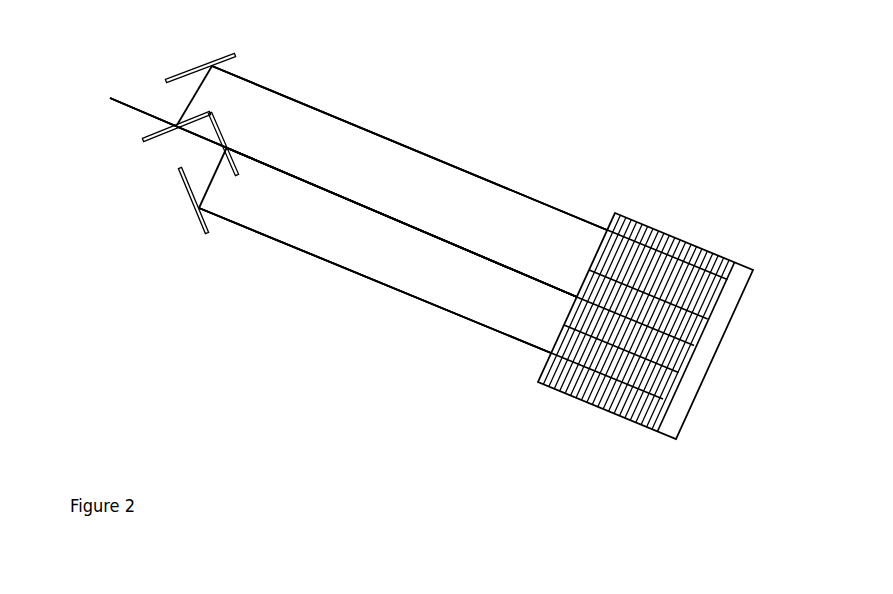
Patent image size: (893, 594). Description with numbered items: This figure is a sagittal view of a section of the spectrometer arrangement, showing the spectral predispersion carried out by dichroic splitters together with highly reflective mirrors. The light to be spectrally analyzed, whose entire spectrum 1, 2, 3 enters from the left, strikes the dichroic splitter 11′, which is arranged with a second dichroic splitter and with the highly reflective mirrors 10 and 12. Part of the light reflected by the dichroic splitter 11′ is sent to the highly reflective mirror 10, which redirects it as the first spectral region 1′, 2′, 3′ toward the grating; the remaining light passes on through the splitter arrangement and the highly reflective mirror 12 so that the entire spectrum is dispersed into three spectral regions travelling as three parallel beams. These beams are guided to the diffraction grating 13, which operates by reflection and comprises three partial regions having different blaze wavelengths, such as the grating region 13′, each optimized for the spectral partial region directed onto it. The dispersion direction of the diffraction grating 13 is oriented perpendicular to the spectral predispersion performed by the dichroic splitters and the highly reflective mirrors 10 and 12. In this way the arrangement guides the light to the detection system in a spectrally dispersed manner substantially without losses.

The light beam 1 is at (322, 187).
The light beam 2 is at (333, 187).
The light beam 3 is at (343, 187).
The spectral region 1′ is at (392, 148).
The spectral region 2′ is at (409, 148).
The spectral region 3′ is at (409, 148).
The highly reflective mirror 10 is at (200, 65).
The dichroic splitter 11′ is at (165, 129).
The highly reflective mirror 12 is at (193, 207).
The diffraction grating 13 is at (644, 326).
The grating region 13′ is at (685, 274).